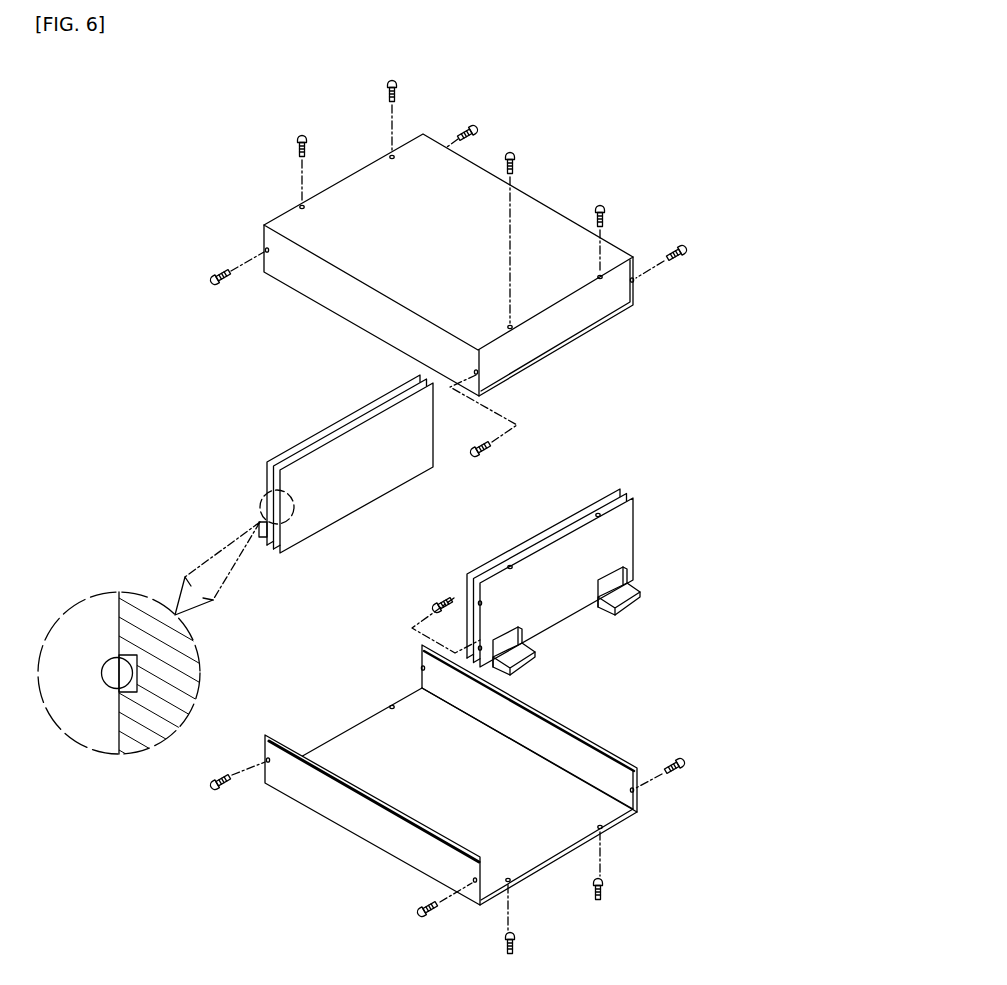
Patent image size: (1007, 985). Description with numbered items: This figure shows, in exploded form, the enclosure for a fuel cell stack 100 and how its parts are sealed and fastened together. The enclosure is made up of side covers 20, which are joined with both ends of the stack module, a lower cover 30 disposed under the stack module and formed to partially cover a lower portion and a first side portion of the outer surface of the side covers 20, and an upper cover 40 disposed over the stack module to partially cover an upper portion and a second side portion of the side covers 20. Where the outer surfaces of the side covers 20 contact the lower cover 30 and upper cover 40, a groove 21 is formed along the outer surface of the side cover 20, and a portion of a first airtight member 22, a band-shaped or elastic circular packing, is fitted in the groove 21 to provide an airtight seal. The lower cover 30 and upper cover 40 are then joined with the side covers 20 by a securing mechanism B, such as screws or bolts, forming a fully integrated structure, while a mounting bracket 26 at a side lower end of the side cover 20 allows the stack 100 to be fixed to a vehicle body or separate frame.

The fuel cell stack 100 is at (554, 138).
The upper cover 40 is at (357, 260).
The lower cover 30 is at (358, 818).
The side cover 20 is at (310, 532).
The groove 21 is at (128, 667).
The first airtight member 22 is at (131, 693).
The mounting bracket 26 is at (635, 602).
The securing mechanism B is at (601, 202).